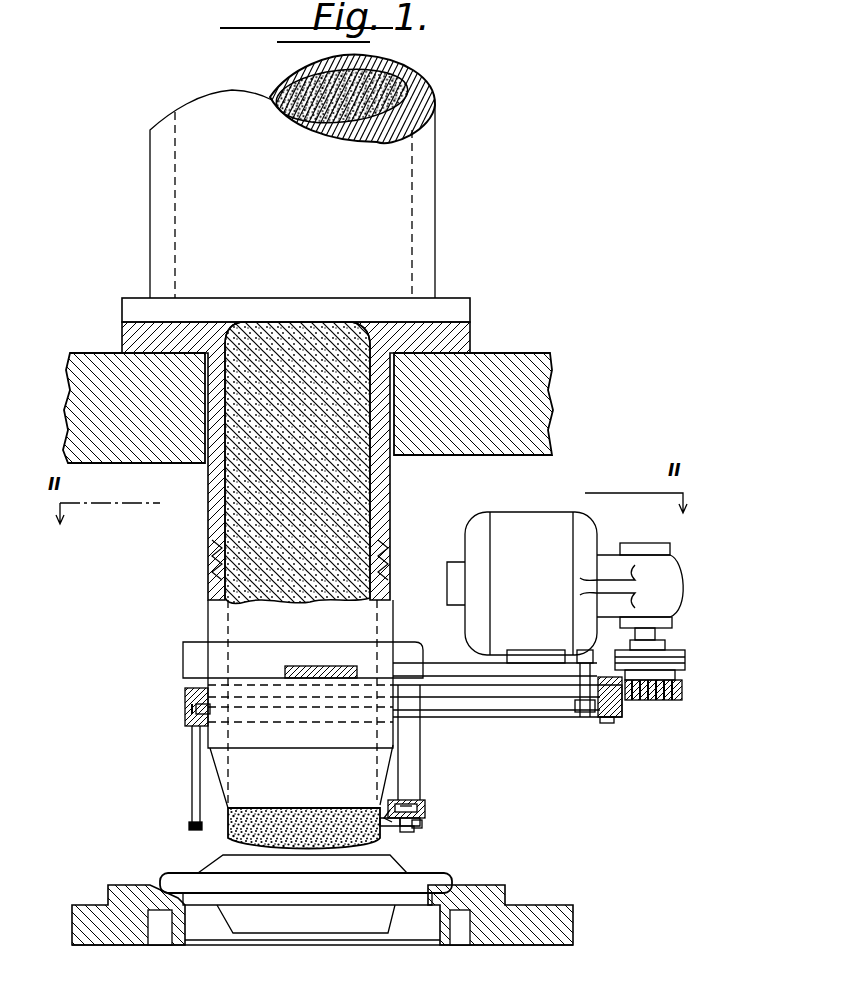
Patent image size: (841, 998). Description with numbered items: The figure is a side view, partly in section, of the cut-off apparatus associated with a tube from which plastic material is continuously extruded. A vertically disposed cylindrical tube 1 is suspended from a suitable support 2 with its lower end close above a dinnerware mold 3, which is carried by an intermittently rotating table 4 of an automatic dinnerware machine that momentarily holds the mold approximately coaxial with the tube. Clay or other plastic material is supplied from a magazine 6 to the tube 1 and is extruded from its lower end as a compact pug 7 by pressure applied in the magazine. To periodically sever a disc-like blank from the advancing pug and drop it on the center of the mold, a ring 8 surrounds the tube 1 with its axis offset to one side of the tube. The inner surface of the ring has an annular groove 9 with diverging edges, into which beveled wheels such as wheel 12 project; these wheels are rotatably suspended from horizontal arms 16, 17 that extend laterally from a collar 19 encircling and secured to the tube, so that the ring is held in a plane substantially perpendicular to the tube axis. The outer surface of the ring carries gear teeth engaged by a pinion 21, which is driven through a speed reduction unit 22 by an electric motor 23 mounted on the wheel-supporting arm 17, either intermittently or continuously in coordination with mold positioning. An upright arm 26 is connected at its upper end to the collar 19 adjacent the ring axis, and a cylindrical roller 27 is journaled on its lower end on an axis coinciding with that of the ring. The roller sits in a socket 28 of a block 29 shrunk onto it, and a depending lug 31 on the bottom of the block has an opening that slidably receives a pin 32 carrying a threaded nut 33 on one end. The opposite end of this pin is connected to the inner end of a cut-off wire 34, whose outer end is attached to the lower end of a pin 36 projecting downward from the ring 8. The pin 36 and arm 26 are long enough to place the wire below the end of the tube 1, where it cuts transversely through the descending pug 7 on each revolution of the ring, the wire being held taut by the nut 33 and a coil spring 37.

The cylindrical tube 1 is at (386, 487).
The support 2 is at (535, 355).
The dinnerware mold 3 is at (448, 876).
The intermittently rotating table 4 is at (560, 906).
The magazine 6 is at (440, 175).
The pug 7 is at (222, 526).
The ring 8 is at (185, 712).
The annular groove 9 is at (208, 707).
The wheel 12 is at (578, 705).
The horizontal arm 16 is at (312, 666).
The horizontal arm 17 is at (445, 672).
The collar 19 is at (192, 653).
The pinion 21 is at (684, 688).
The speed reduction unit 22 is at (682, 586).
The electric motor 23 is at (545, 525).
The upright arm 26 is at (416, 747).
The cylindrical roller 27 is at (420, 800).
The socket 28 is at (393, 800).
The block 29 is at (420, 818).
The depending lug 31 is at (414, 828).
The pin 32 is at (405, 826).
The nut 33 is at (422, 822).
The cut-off wire 34 is at (215, 826).
The pin 36 is at (190, 773).
The coil spring 37 is at (390, 803).